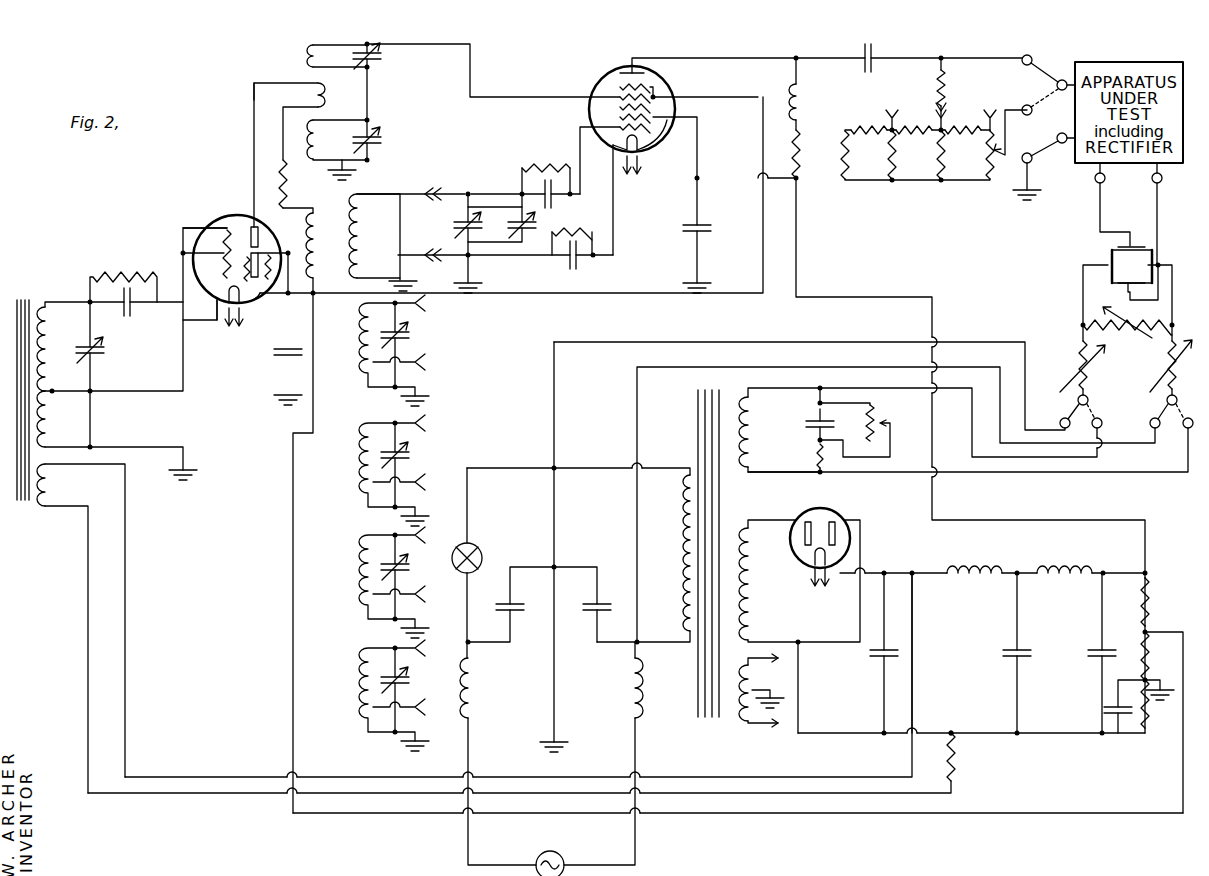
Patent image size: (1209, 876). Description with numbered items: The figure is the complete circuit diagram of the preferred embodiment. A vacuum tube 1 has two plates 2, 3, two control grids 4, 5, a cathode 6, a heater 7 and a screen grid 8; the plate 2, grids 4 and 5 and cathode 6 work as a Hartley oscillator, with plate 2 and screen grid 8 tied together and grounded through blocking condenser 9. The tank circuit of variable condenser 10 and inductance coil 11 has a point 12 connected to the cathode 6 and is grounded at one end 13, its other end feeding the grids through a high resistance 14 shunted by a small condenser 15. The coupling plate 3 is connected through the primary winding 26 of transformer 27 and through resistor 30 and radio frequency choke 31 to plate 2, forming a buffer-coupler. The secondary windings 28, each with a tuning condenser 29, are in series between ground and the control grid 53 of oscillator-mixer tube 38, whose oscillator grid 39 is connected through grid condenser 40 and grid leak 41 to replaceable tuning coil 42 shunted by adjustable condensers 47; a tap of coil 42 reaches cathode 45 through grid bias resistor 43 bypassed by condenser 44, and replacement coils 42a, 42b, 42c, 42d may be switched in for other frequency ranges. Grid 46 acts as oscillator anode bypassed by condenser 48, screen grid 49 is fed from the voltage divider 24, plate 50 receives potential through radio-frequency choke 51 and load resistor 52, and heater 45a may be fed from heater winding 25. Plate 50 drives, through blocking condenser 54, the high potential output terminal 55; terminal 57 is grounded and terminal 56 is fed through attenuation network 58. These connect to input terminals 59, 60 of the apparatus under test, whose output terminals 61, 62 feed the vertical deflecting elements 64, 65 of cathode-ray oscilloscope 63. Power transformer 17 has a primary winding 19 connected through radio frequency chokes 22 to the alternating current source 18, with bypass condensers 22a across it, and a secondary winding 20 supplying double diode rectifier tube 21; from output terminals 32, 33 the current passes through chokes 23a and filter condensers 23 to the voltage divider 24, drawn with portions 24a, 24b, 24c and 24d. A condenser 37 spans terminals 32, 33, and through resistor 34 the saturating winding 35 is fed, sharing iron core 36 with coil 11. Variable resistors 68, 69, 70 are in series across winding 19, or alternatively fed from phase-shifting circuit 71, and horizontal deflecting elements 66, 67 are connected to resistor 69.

The vacuum tube 1 is at (223, 267).
The plate 2 is at (263, 252).
The coupling plate 3 is at (250, 225).
The control grid 4 is at (208, 228).
The control grid 5 is at (224, 258).
The cathode 6 is at (212, 318).
The heater 7 is at (230, 324).
The screen grid 8 is at (262, 300).
The blocking condenser 9 is at (274, 358).
The variable condenser 10 is at (107, 352).
The inductance coil 11 is at (51, 341).
The tap point 12 is at (52, 394).
The grounded end 13 is at (183, 462).
The high resistance 14 is at (137, 272).
The small condenser 15 is at (134, 308).
The power transformer 17 is at (680, 733).
The alternating current source 18 is at (558, 854).
The primary winding 19 is at (676, 546).
The secondary winding 20 is at (750, 552).
The double diode rectifier tube 21 is at (822, 512).
The radio frequency chokes 22 is at (628, 684).
The radio frequency bypass condensers 22a is at (590, 610).
The filter condensers 23 is at (1084, 658).
The chokes 23a is at (1046, 566).
The voltage divider 24 is at (1109, 636).
The resistor section 24a is at (1163, 602).
The resistor section 24b is at (1163, 656).
The resistor section 24c is at (1146, 712).
The by-pass condenser 24d is at (1104, 710).
The heater winding 25 is at (754, 674).
The primary winding 26 is at (308, 96).
The transformer 27 is at (334, 97).
The secondary windings 28 is at (326, 102).
The tuning condenser 29 is at (384, 144).
The resistor 30 is at (287, 188).
The radio frequency choke 31 is at (315, 261).
The output terminal 32 is at (912, 572).
The output terminal 33 is at (951, 730).
The resistor 34 is at (956, 756).
The saturating winding 35 is at (52, 472).
The iron core 36 is at (28, 302).
The condenser 37 is at (874, 654).
The oscillator-mixer tube 38 is at (625, 114).
The oscillator grid 39 is at (616, 116).
The grid condenser 40 is at (552, 204).
The grid leak 41 is at (541, 166).
The replaceable tuning coil 42 is at (367, 234).
The replacement coil 42a is at (356, 350).
The replacement coil 42b is at (352, 470).
The replacement coil 42c is at (347, 582).
The replacement coil 42d is at (348, 690).
The grid bias resistor 43 is at (582, 230).
The radio frequency bypass condenser 44 is at (576, 262).
The cathode 45 is at (613, 148).
The heater 45a is at (642, 178).
The grid 46 is at (662, 144).
The manually adjustable condensers 47 is at (495, 250).
The bypass condenser 48 is at (682, 231).
The screen grid 49 is at (616, 86).
The plate 50 is at (632, 70).
The radio-frequency choke 51 is at (802, 102).
The load resistor 52 is at (804, 158).
The control grid 53 is at (616, 96).
The blocking condenser 54 is at (862, 72).
The high potential output terminal 55 is at (1030, 48).
The third output terminal 56 is at (1022, 99).
The second output terminal 57 is at (1026, 165).
The attenuation network 58 is at (939, 189).
The input terminal 59 is at (1067, 74).
The input terminal 60 is at (1058, 126).
The output terminal 61 is at (1106, 178).
The output terminal 62 is at (1152, 184).
The cathode-ray oscilloscope 63 is at (1130, 254).
The vertical deflecting element 64 is at (1136, 245).
The vertical deflecting element 65 is at (1124, 288).
The horizontal deflecting element 66 is at (1154, 264).
The horizontal deflecting element 67 is at (1108, 264).
The variable resistor 68 is at (1088, 378).
The variable resistor 69 is at (1116, 335).
The variable resistor 70 is at (1162, 390).
The phase-shifting circuit 71 is at (833, 422).